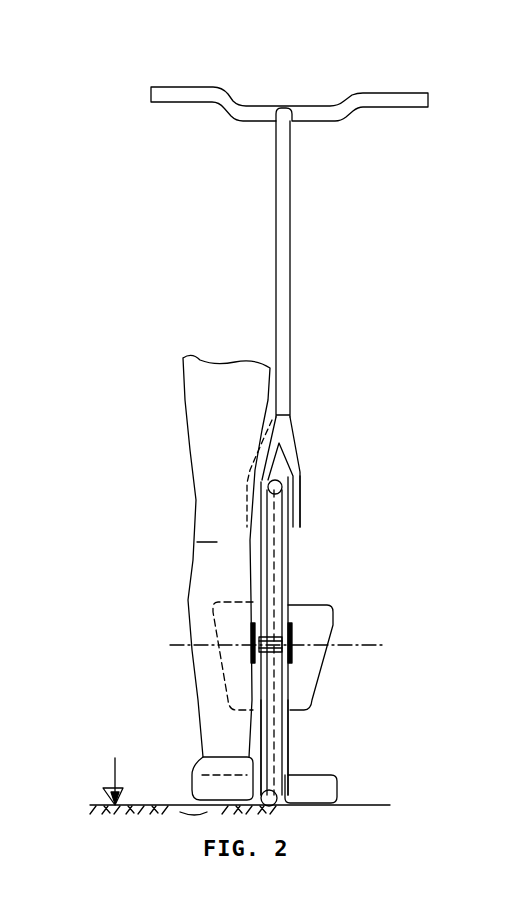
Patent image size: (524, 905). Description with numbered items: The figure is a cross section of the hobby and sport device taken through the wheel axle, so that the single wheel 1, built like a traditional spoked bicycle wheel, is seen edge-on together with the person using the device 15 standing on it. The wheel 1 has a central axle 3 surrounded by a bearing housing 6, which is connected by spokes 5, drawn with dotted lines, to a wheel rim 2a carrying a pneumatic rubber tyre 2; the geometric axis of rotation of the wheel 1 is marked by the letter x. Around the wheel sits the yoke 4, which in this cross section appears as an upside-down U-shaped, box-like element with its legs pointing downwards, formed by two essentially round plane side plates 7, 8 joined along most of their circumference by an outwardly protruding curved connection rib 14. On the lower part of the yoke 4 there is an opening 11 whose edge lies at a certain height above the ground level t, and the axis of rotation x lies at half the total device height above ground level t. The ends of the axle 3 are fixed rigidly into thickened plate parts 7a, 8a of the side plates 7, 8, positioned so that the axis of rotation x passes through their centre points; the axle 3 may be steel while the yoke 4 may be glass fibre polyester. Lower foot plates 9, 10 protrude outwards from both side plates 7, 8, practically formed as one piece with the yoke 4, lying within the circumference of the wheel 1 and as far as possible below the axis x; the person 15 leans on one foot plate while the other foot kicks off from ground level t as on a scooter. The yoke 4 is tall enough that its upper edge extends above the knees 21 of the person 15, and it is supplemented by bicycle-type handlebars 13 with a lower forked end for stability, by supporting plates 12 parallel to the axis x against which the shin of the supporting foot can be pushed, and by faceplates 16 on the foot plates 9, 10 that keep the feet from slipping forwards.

The wheel 1 is at (282, 543).
The pneumatic rubber tyre 2 is at (300, 473).
The wheel rim 2a is at (300, 500).
The central axle 3 is at (288, 602).
The yoke 4 is at (290, 740).
The spokes 5 is at (257, 567).
The bearing housing 6 is at (255, 680).
The side plate 7 is at (262, 540).
The thickened plate part 7a is at (250, 654).
The side plate 8 is at (288, 560).
The thickened plate part 8a is at (293, 653).
The lower foot plate 9 is at (185, 812).
The lower foot plate 10 is at (305, 812).
The opening 11 is at (318, 822).
The supporting plates 12 is at (210, 613).
The handlebars 13 is at (292, 292).
The curved connection rib 14 is at (278, 478).
The person using the device 15 is at (183, 380).
The faceplates 16 is at (318, 788).
The knees 21 is at (217, 542).
The ground level t is at (112, 758).
The geometric axis of rotation x is at (375, 647).